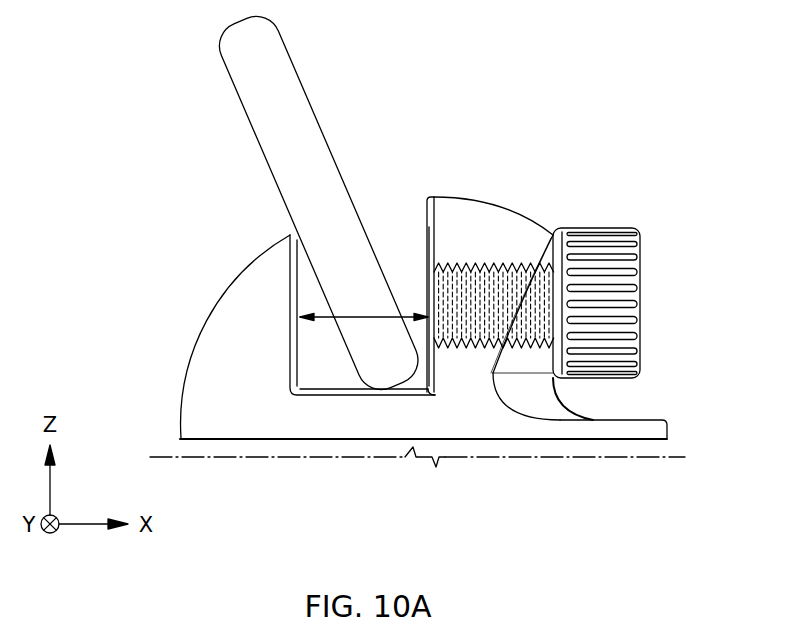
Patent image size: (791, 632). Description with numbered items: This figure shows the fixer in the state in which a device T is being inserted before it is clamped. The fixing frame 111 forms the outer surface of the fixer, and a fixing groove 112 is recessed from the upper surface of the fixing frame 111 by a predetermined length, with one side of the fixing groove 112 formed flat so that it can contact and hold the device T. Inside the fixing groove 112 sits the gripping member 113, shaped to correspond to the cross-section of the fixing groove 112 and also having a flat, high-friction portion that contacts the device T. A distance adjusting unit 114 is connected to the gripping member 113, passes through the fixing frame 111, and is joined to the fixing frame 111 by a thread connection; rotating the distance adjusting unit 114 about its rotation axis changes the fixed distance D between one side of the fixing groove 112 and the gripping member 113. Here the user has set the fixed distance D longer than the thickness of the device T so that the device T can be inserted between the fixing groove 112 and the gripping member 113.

The device T is at (285, 70).
The fixing frame 111 is at (263, 425).
The fixing groove 112 is at (400, 245).
The gripping member 113 is at (424, 371).
The distance adjusting unit 114 is at (478, 347).
The fixed distance D is at (364, 305).